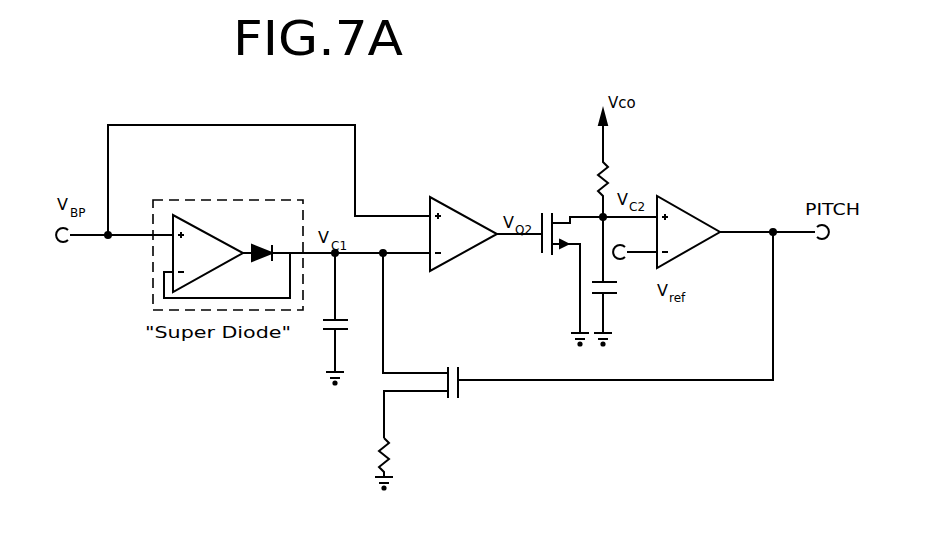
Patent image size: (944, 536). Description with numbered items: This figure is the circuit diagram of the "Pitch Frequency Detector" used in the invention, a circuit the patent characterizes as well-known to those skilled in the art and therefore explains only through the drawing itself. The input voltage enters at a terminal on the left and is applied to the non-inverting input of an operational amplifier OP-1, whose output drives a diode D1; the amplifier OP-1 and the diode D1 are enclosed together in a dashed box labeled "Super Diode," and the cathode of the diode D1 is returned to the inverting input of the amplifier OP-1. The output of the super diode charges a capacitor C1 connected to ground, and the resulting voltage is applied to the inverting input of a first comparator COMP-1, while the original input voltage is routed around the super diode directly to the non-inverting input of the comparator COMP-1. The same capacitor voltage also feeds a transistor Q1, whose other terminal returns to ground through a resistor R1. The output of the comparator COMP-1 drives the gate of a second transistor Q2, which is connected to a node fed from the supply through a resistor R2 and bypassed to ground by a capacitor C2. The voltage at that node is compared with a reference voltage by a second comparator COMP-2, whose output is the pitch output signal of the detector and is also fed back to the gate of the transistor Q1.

The operational amplifier of super diode OP-1 is at (227, 256).
The diode D1 is at (336, 246).
The capacitor C1 is at (343, 317).
The transistor Q1 is at (578, 335).
The resistor R1 is at (403, 464).
The comparator COMP-1 is at (486, 222).
The transistor Q2 is at (572, 279).
The resistor R2 is at (617, 163).
The capacitor C2 is at (613, 281).
The comparator COMP-2 is at (736, 219).